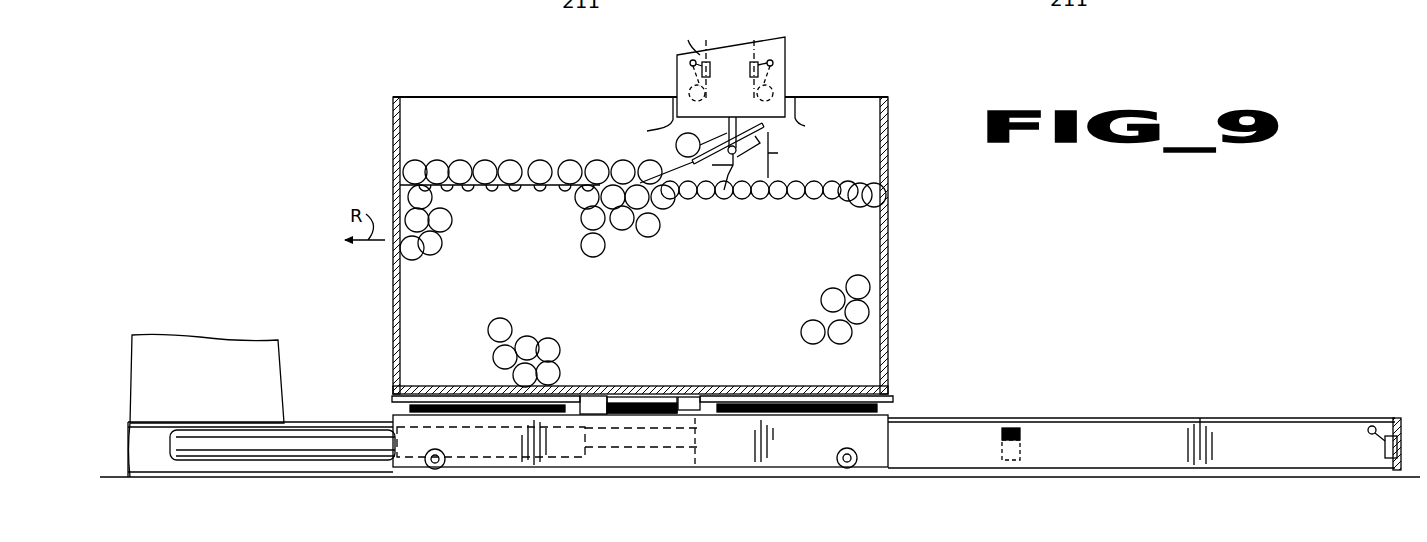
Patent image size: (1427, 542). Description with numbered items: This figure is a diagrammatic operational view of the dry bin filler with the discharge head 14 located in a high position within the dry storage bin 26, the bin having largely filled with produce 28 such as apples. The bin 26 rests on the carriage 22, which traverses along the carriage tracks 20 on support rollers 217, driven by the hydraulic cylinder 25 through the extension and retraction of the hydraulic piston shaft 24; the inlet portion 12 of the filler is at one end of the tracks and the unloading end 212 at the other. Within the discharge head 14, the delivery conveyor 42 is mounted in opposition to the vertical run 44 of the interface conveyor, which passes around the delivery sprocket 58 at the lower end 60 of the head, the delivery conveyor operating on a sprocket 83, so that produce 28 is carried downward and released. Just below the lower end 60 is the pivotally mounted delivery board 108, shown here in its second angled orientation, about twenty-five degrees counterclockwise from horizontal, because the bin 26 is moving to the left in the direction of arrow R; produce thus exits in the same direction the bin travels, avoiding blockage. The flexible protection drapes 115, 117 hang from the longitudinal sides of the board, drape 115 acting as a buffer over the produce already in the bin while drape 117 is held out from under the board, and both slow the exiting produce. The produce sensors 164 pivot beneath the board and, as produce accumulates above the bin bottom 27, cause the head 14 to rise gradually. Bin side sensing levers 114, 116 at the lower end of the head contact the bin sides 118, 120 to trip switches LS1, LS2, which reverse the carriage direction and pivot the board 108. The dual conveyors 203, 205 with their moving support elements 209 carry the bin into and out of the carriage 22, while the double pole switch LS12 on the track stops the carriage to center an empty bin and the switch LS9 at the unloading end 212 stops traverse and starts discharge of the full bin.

The inlet portion 12 is at (192, 335).
The discharge head 14 is at (675, 60).
The carriage tracks 20 is at (1107, 418).
The carriage 22 is at (890, 420).
The hydraulic piston shaft 24 is at (677, 430).
The hydraulic cylinder 25 is at (302, 423).
The dry storage bin 26 is at (392, 128).
The bottom of bin 27 is at (606, 388).
The produce 28 is at (540, 160).
The delivery conveyor 42 is at (792, 33).
The vertical run of interface conveyor 44 is at (683, 34).
The delivery sprocket 58 is at (677, 72).
The lower end of discharge head 60 is at (644, 131).
The sprocket 83 is at (773, 88).
The delivery board 108 is at (770, 133).
The bin side sensing lever 114 is at (672, 108).
The protection drape 115 is at (677, 170).
The bin side sensing lever 116 is at (793, 112).
The protection drape 117 is at (778, 153).
The side of bin 118 is at (393, 153).
The side of bin 120 is at (893, 237).
The produce sensors 164 is at (773, 200).
The carriage conveyor 203 is at (392, 391).
The carriage conveyor 205 is at (886, 392).
The moving support elements 209 is at (457, 398).
The unloading end 212 is at (1248, 420).
The support rollers 217 is at (443, 454).
The switch LS1 is at (711, 62).
The switch LS2 is at (788, 50).
The switch LS9 is at (1385, 447).
The double pole switch LS12 is at (1022, 448).